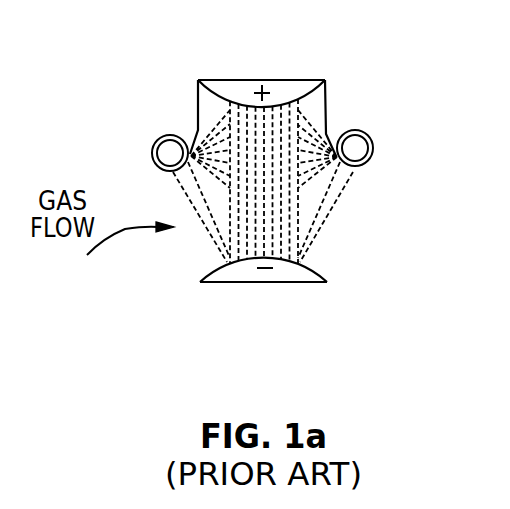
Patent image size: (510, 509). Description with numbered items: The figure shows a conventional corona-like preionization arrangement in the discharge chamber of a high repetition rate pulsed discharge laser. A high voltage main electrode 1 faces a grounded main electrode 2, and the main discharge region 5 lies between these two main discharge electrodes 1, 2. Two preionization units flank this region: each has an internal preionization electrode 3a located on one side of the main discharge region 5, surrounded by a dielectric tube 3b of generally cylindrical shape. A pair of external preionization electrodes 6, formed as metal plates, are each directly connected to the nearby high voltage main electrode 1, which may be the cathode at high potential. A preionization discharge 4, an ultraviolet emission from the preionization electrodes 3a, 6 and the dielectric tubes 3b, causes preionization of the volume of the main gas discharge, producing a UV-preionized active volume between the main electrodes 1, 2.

The high voltage main electrode 1 is at (283, 93).
The grounded main electrode 2 is at (272, 275).
The internal preionization electrode 3a is at (168, 148).
The dielectric tube 3b is at (153, 145).
The preionization discharge 4 is at (210, 237).
The main discharge region 5 is at (274, 232).
The external preionization electrode 6 is at (199, 82).